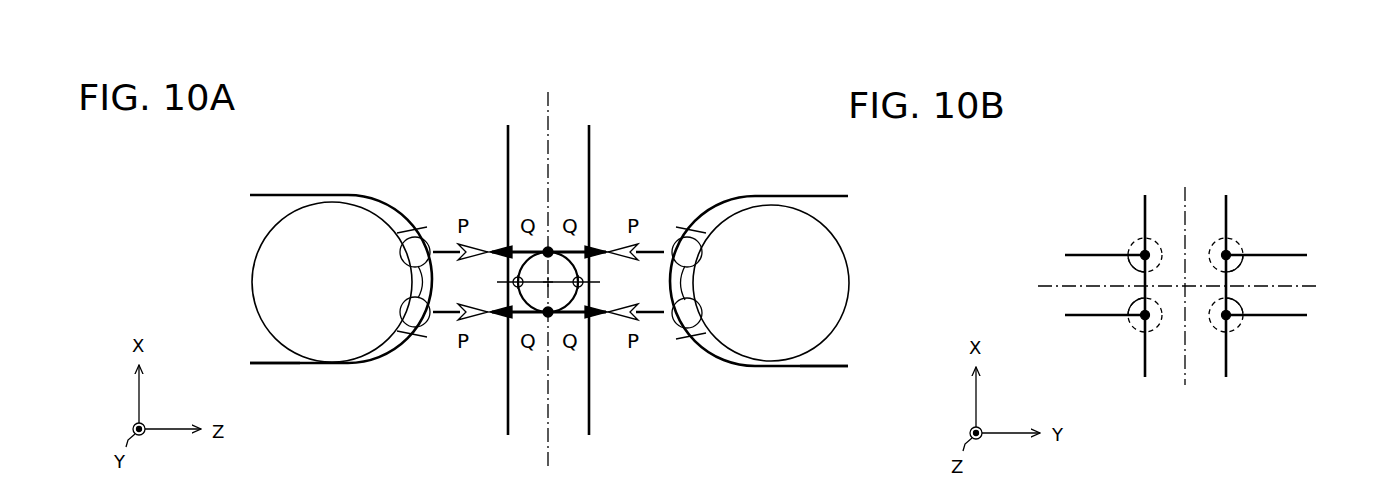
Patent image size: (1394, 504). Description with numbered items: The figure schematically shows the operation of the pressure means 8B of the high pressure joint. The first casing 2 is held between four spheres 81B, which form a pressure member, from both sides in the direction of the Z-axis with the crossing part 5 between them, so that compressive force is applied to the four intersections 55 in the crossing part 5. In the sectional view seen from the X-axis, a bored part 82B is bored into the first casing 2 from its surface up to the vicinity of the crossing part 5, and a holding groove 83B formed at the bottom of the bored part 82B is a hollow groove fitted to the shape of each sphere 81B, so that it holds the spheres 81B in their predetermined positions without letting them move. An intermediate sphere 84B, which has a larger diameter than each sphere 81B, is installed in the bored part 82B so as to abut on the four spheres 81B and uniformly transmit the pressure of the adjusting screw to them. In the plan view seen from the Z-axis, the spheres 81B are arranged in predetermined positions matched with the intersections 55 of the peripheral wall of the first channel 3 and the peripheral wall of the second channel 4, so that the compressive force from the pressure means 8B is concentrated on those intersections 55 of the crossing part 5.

In FIG. 10A, the first casing 2 is at (274, 121).
In FIG. 10B, the first casing 2 is at (1050, 127).
In FIG. 10A, the first channel 3 is at (507, 399).
In FIG. 10B, the first channel 3 is at (1078, 255).
In FIG. 10A, the second channel 4 is at (517, 279).
In FIG. 10B, the second channel 4 is at (1228, 365).
In FIG. 10A, the crossing part 5 is at (483, 215).
In FIG. 10B, the crossing part 5 is at (1244, 234).
In FIG. 10A, the pressure means 8B is at (335, 168).
In FIG. 10A, the intersections 55 is at (549, 250).
In FIG. 10B, the intersections 55 is at (1210, 270).
In FIG. 10A, the spheres 81B is at (418, 240).
In FIG. 10B, the spheres 81B is at (1133, 242).
In FIG. 10A, the bored part 82B is at (285, 365).
In FIG. 10A, the holding groove 83B is at (415, 332).
In FIG. 10A, the intermediate sphere 84B is at (252, 282).